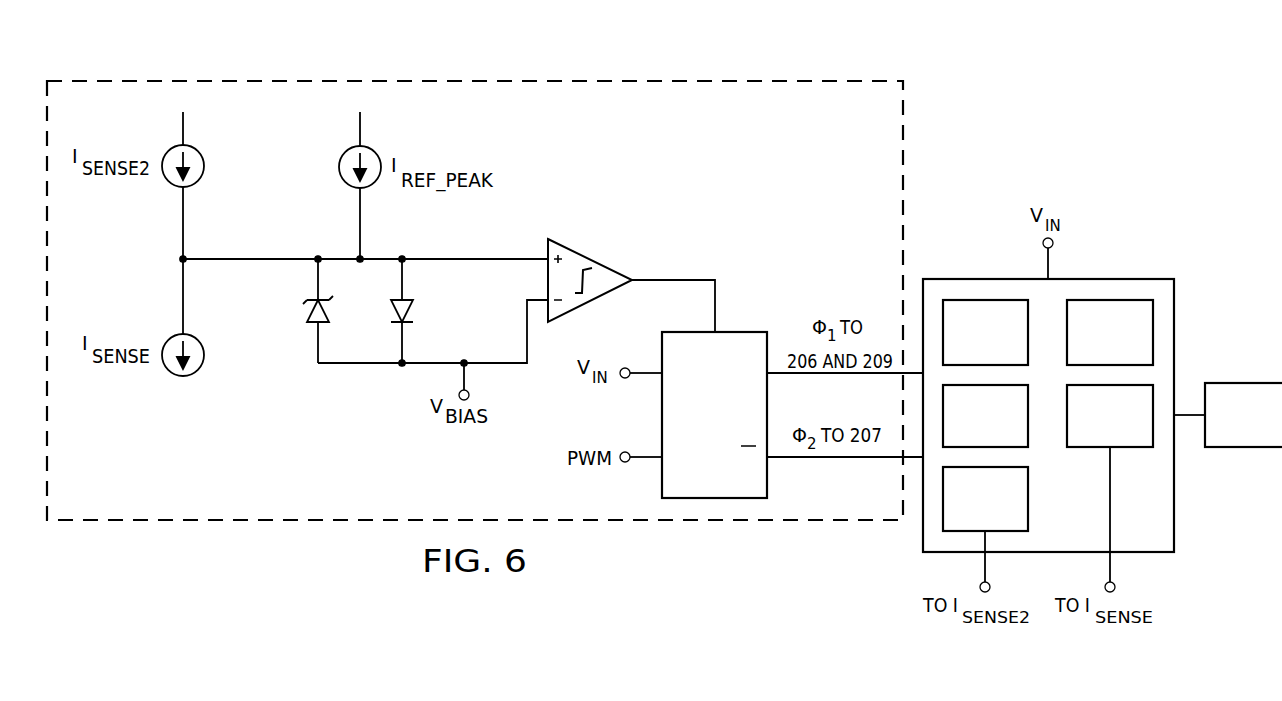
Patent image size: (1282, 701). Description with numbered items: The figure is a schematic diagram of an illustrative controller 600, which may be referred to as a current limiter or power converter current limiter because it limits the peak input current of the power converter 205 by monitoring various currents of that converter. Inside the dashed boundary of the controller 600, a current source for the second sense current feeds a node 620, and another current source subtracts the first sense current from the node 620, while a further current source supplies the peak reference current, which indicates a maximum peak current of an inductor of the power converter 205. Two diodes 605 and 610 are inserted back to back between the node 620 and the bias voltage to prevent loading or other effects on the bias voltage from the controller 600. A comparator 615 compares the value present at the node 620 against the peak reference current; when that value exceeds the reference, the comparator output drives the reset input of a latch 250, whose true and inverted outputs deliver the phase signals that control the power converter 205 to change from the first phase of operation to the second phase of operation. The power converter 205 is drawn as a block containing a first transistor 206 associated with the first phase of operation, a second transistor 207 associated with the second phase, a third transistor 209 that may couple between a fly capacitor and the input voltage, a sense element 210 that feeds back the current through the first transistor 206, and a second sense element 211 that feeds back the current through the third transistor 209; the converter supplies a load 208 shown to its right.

The controller 600 is at (372, 79).
The diode 605 is at (300, 309).
The diode 610 is at (410, 312).
The comparator 615 is at (588, 258).
The node 620 is at (178, 262).
The flip-flop latch 250 is at (736, 432).
The power converter 205 is at (1119, 277).
The first transistor 206 is at (1005, 345).
The second transistor 207 is at (1005, 428).
The load 208 is at (1266, 428).
The third transistor 209 is at (1130, 345).
The sense element 210 is at (1130, 428).
The second sense element 211 is at (1005, 511).